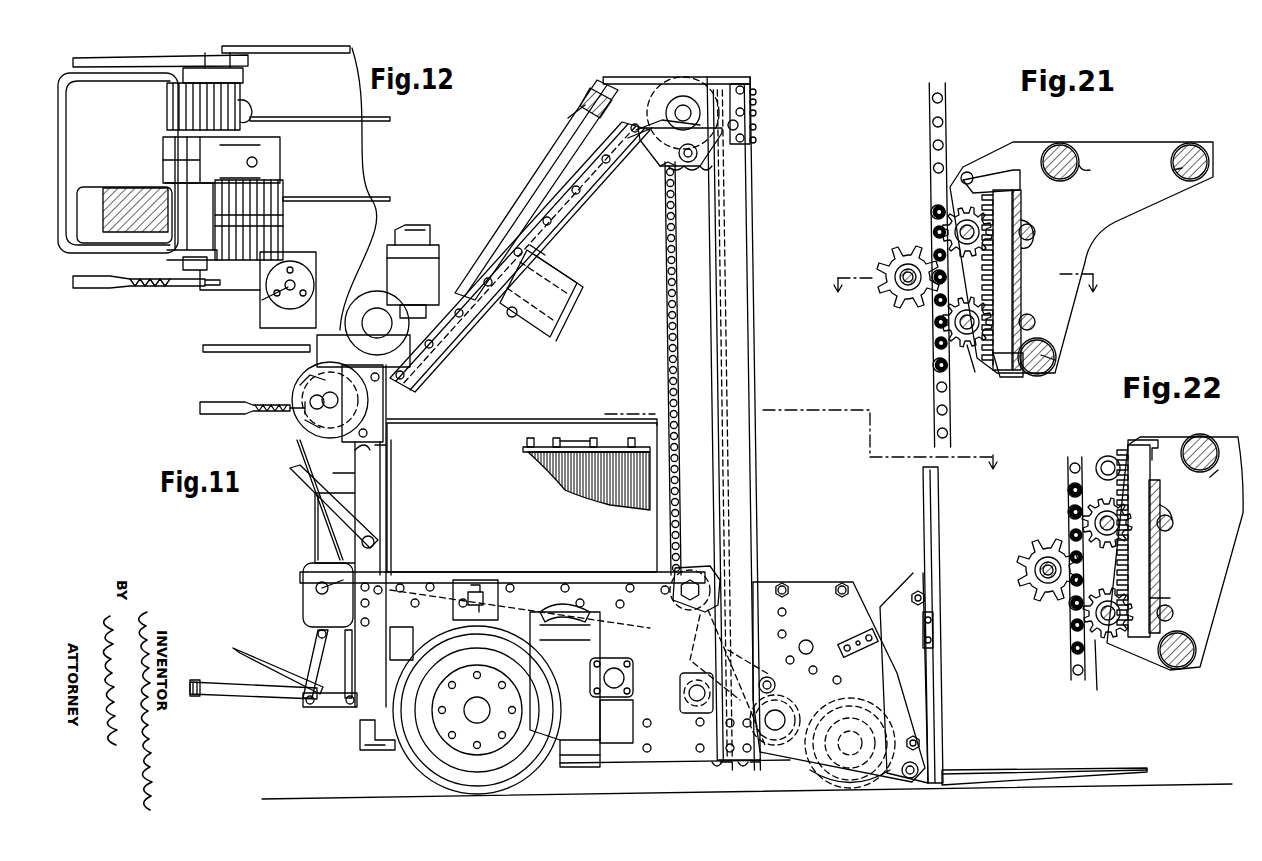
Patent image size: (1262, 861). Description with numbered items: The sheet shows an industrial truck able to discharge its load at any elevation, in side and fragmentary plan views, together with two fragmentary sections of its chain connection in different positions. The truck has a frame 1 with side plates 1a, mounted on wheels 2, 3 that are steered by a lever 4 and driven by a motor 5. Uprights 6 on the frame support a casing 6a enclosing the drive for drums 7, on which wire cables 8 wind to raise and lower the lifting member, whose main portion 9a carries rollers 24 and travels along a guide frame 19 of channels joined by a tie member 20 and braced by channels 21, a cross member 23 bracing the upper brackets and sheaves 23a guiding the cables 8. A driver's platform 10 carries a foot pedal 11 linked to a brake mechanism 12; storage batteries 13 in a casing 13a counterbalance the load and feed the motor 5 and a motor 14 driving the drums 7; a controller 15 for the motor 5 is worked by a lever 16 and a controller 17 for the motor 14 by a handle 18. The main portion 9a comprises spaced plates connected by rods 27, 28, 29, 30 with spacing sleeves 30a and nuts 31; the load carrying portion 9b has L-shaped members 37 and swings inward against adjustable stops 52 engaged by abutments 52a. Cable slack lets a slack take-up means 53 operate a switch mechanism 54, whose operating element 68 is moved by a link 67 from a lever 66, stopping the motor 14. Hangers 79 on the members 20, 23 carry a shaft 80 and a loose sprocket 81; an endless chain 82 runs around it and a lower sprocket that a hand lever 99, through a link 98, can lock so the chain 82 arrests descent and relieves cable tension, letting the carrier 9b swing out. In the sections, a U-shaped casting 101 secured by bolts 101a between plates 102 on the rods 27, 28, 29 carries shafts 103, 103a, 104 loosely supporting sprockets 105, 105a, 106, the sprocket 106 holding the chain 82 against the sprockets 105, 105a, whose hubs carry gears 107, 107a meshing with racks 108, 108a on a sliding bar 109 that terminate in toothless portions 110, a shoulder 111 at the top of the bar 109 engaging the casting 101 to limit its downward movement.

In FIG. 11, the frame 1 is at (518, 572).
In FIG. 11, the side plates 1a is at (452, 585).
In FIG. 11, the wheel 2 is at (415, 762).
In FIG. 11, the wheel 3 is at (825, 777).
In FIG. 11, the lever 4 is at (243, 356).
In FIG. 11, the motor 5 is at (590, 643).
In FIG. 11, the uprights 6 is at (388, 470).
In FIG. 12, the casing 6a is at (163, 150).
In FIG. 12, the drums 7 is at (250, 118).
In FIG. 11, the drums 7 is at (330, 445).
In FIG. 12, the flexible hoisting elements 8 is at (320, 150).
In FIG. 11, the flexible hoisting elements 8 is at (393, 395).
In FIG. 11, the main portion of the lifting member 9a is at (810, 592).
In FIG. 11, the load carrying portion 9b is at (923, 625).
In FIG. 12, the platform 10 is at (137, 166).
In FIG. 11, the platform 10 is at (222, 700).
In FIG. 12, the foot pedal 11 is at (136, 190).
In FIG. 11, the foot pedal 11 is at (262, 651).
In FIG. 11, the brake mechanism 12 is at (425, 625).
In FIG. 11, the electric storage batteries 13 is at (600, 495).
In FIG. 11, the casing 13a is at (500, 422).
In FIG. 12, the motor 14 is at (284, 200).
In FIG. 11, the controller 15 is at (303, 578).
In FIG. 12, the lever 16 is at (88, 288).
In FIG. 11, the lever 16 is at (249, 418).
In FIG. 12, the controller 17 is at (310, 256).
In FIG. 11, the controller 17 is at (448, 262).
In FIG. 12, the handle 18 is at (262, 300).
In FIG. 11, the handle 18 is at (404, 232).
In FIG. 11, the guide frame 19 is at (687, 423).
In FIG. 11, the tie member 20 is at (751, 95).
In FIG. 11, the brace members 21 is at (532, 203).
In FIG. 11, the cross member 23 is at (578, 108).
In FIG. 21, the cross member 23 is at (963, 292).
In FIG. 11, the sheaves 23a is at (650, 145).
In FIG. 11, the rollers 24 is at (686, 612).
In FIG. 11, the rod 27 is at (777, 684).
In FIG. 21, the rod 27 is at (1037, 376).
In FIG. 22, the rod 27 is at (1172, 670).
In FIG. 11, the rod 28 is at (782, 584).
In FIG. 21, the rod 28 is at (1062, 146).
In FIG. 22, the rod 28 is at (1200, 442).
In FIG. 11, the rod 29 is at (839, 581).
In FIG. 21, the rod 29 is at (1191, 146).
In FIG. 11, the rod 30 is at (908, 779).
In FIG. 21, the sleeves 30a is at (1111, 262).
In FIG. 22, the sleeves 30a is at (1202, 481).
In FIG. 11, the nuts 31 is at (780, 708).
In FIG. 11, the L-shaped members 37 is at (1003, 770).
In FIG. 11, the adjustable stops 52 is at (868, 652).
In FIG. 11, the abutments 52a is at (934, 630).
In FIG. 11, the slack take-up means 53 is at (587, 101).
In FIG. 11, the switch mechanism 54 is at (544, 295).
In FIG. 11, the lever 66 is at (684, 90).
In FIG. 11, the link 67 is at (545, 250).
In FIG. 11, the operating element 68 is at (507, 315).
In FIG. 11, the hangers 79 is at (660, 158).
In FIG. 11, the shaft 80 is at (658, 175).
In FIG. 11, the sprocket 81 is at (690, 169).
In FIG. 11, the endless sprocket chain 82 is at (665, 225).
In FIG. 21, the endless sprocket chain 82 is at (928, 400).
In FIG. 22, the endless sprocket chain 82 is at (1066, 667).
In FIG. 11, the link 98 is at (572, 605).
In FIG. 11, the hand operated lever 99 is at (303, 490).
In FIG. 21, the U-shaped casting 101 is at (1021, 256).
In FIG. 22, the U-shaped casting 101 is at (1162, 568).
In FIG. 21, the bolts 101a is at (1032, 236).
In FIG. 22, the bolts 101a is at (1172, 506).
In FIG. 21, the plates 102 is at (1135, 212).
In FIG. 22, the plates 102 is at (1230, 570).
In FIG. 21, the shaft 103 is at (1013, 212).
In FIG. 22, the shaft 103 is at (1140, 480).
In FIG. 21, the shaft 103a is at (970, 365).
In FIG. 22, the shaft 103a is at (1108, 671).
In FIG. 21, the shaft 104 is at (896, 300).
In FIG. 22, the shaft 104 is at (1030, 580).
In FIG. 21, the sprocket 105 is at (968, 172).
In FIG. 22, the sprocket 105 is at (1067, 515).
In FIG. 21, the sprocket 105a is at (929, 365).
In FIG. 22, the sprocket 105a is at (1108, 640).
In FIG. 21, the sprocket 106 is at (893, 296).
In FIG. 22, the sprocket 106 is at (1020, 564).
In FIG. 21, the gear 107 is at (929, 220).
In FIG. 22, the gear 107 is at (1067, 494).
In FIG. 21, the gear 107a is at (962, 284).
In FIG. 22, the gear 107a is at (1067, 612).
In FIG. 21, the rack 108 is at (993, 232).
In FIG. 22, the rack 108 is at (1125, 452).
In FIG. 21, the rack 108a is at (995, 300).
In FIG. 21, the movable bar 109 is at (1008, 378).
In FIG. 22, the movable bar 109 is at (1150, 558).
In FIG. 21, the toothless portions 110 is at (1021, 272).
In FIG. 22, the toothless portions 110 is at (1160, 500).
In FIG. 21, the shoulder 111 is at (1025, 180).
In FIG. 22, the shoulder 111 is at (1170, 442).